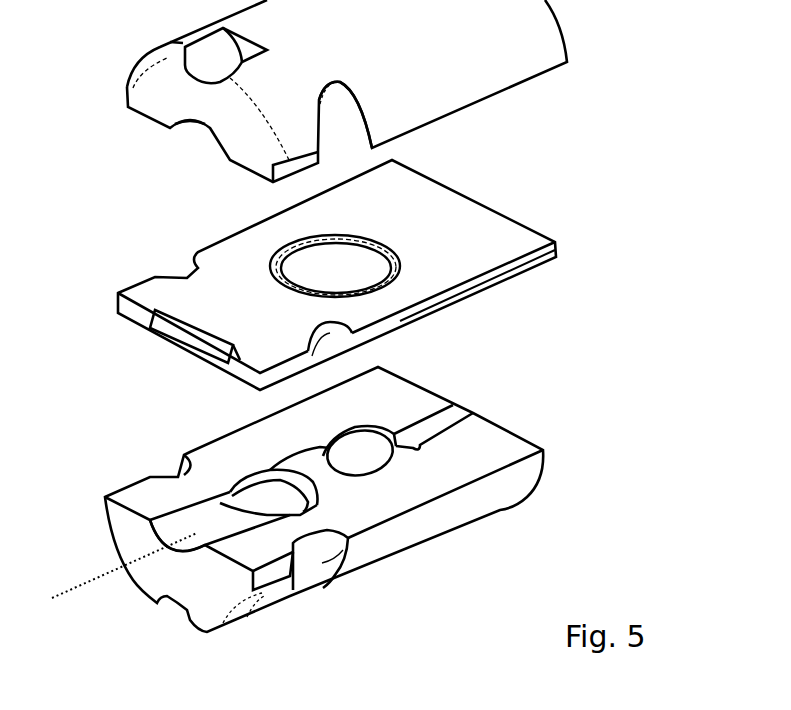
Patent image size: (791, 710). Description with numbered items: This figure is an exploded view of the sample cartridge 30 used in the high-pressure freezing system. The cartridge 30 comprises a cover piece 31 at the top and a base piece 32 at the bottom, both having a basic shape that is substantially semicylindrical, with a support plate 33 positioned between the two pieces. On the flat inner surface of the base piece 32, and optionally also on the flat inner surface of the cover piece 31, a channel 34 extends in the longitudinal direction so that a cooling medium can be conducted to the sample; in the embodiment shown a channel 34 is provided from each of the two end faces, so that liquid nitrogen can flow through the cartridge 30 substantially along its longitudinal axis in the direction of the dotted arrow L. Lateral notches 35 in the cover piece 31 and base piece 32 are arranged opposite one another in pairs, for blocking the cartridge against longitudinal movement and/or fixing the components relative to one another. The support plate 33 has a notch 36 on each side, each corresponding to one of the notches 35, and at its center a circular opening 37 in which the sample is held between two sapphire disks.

The cartridge 30 is at (553, 511).
The cover piece 31 is at (143, 60).
The base piece 32 is at (303, 499).
The support plate 33 is at (300, 275).
The channel 34 is at (462, 410).
The lateral notch 35 is at (337, 122).
The notch 36 is at (335, 342).
The circular opening 37 is at (365, 237).